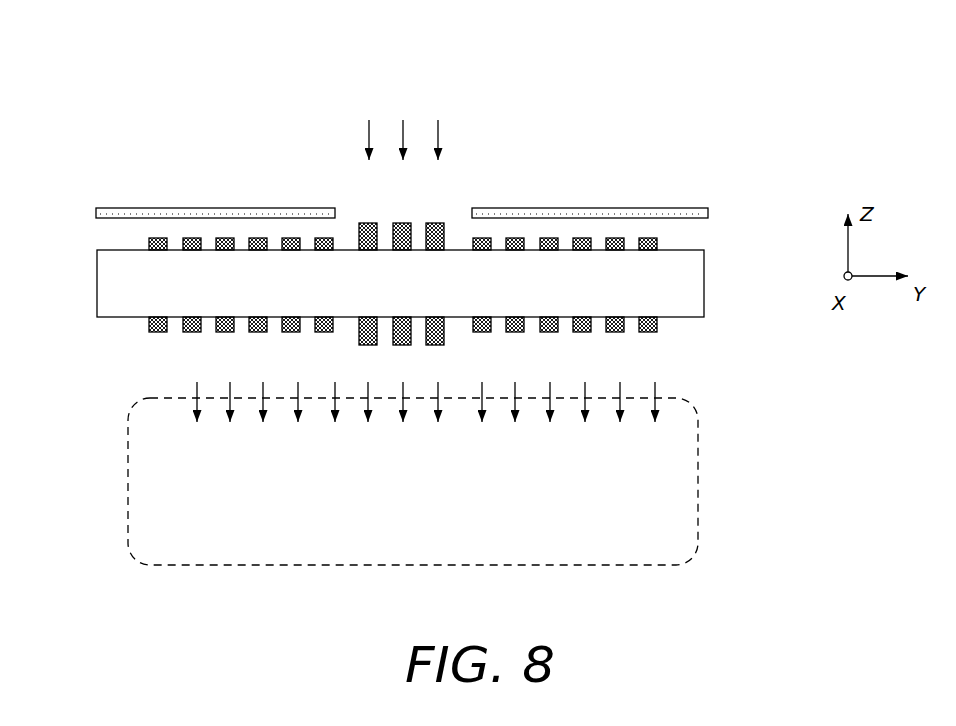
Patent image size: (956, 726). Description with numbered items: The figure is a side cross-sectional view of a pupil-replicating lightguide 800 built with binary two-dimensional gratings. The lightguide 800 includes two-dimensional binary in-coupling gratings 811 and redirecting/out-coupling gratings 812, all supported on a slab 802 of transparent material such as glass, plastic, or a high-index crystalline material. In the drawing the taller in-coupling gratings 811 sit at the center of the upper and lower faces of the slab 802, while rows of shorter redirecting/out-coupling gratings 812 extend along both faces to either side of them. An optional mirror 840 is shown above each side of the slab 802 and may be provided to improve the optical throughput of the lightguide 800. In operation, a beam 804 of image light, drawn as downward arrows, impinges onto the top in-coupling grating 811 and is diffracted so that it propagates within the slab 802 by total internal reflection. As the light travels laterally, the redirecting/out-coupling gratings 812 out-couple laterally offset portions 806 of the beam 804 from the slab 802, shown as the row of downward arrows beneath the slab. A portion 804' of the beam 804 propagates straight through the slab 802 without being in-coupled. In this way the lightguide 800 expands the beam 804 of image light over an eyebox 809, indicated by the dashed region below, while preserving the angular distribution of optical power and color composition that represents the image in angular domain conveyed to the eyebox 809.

The pupil-replicating lightguide 800 is at (138, 103).
The slab 802 is at (307, 297).
The beam of image light 804 is at (404, 117).
The portion of the beam 804' is at (446, 359).
The laterally offset portions of the beam 806 is at (670, 427).
The eyebox 809 is at (400, 535).
The 2D binary in-coupling gratings 811 is at (427, 299).
The redirecting/out-coupling gratings 812 is at (207, 264).
The mirror 840 is at (147, 208).